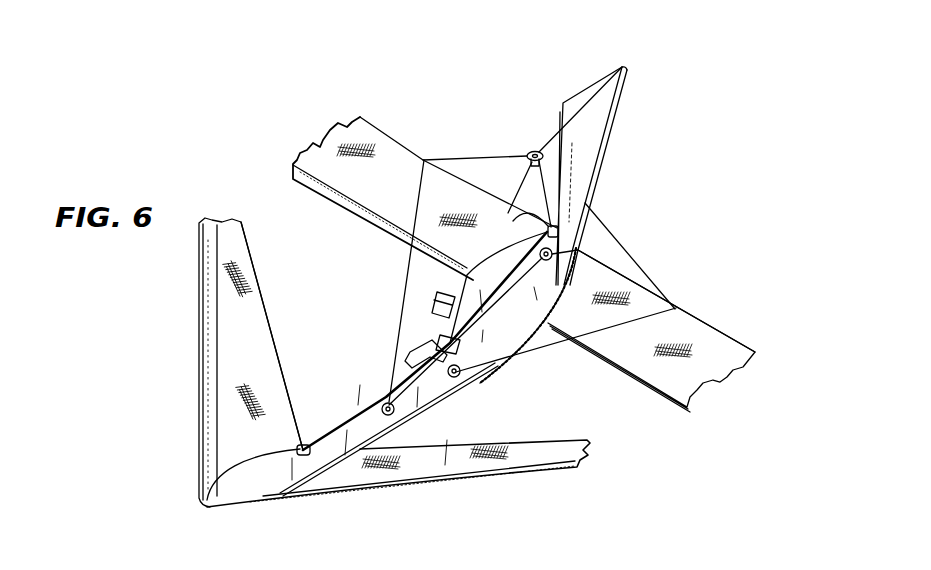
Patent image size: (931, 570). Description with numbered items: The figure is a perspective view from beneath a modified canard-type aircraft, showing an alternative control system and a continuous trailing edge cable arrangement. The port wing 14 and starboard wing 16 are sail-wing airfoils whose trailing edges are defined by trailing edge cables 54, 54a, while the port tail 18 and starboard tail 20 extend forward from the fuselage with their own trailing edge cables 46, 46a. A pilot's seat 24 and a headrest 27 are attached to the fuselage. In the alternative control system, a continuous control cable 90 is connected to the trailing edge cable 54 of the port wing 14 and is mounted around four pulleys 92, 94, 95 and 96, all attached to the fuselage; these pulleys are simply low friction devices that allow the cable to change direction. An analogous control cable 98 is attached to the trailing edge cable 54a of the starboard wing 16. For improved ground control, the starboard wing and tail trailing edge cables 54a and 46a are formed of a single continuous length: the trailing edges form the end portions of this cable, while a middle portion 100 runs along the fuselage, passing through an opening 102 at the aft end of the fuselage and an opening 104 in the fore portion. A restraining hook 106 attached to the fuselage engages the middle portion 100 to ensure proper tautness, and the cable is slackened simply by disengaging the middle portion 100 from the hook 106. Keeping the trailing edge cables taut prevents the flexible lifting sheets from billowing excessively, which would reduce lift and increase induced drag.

The port wing 14 is at (407, 150).
The trailing edge cable 54 is at (376, 129).
The pulley 92 is at (534, 151).
The opening 102 is at (515, 206).
The pulley 94 is at (562, 248).
The trailing edge cable 54a is at (648, 285).
The starboard wing 16 is at (713, 330).
The control cable 90 is at (401, 276).
The headrest 27 is at (450, 291).
The restraining hook 106 is at (440, 330).
The trailing edge cable 46 is at (279, 344).
The port tail 18 is at (230, 385).
The pulley 96 is at (384, 398).
The middle portion 100 is at (366, 407).
The pulley 95 is at (458, 373).
The pilot's seat 24 is at (433, 374).
The control cable 98 is at (552, 358).
The trailing edge cable 46a is at (510, 440).
The starboard tail 20 is at (477, 463).
The opening 104 is at (300, 451).